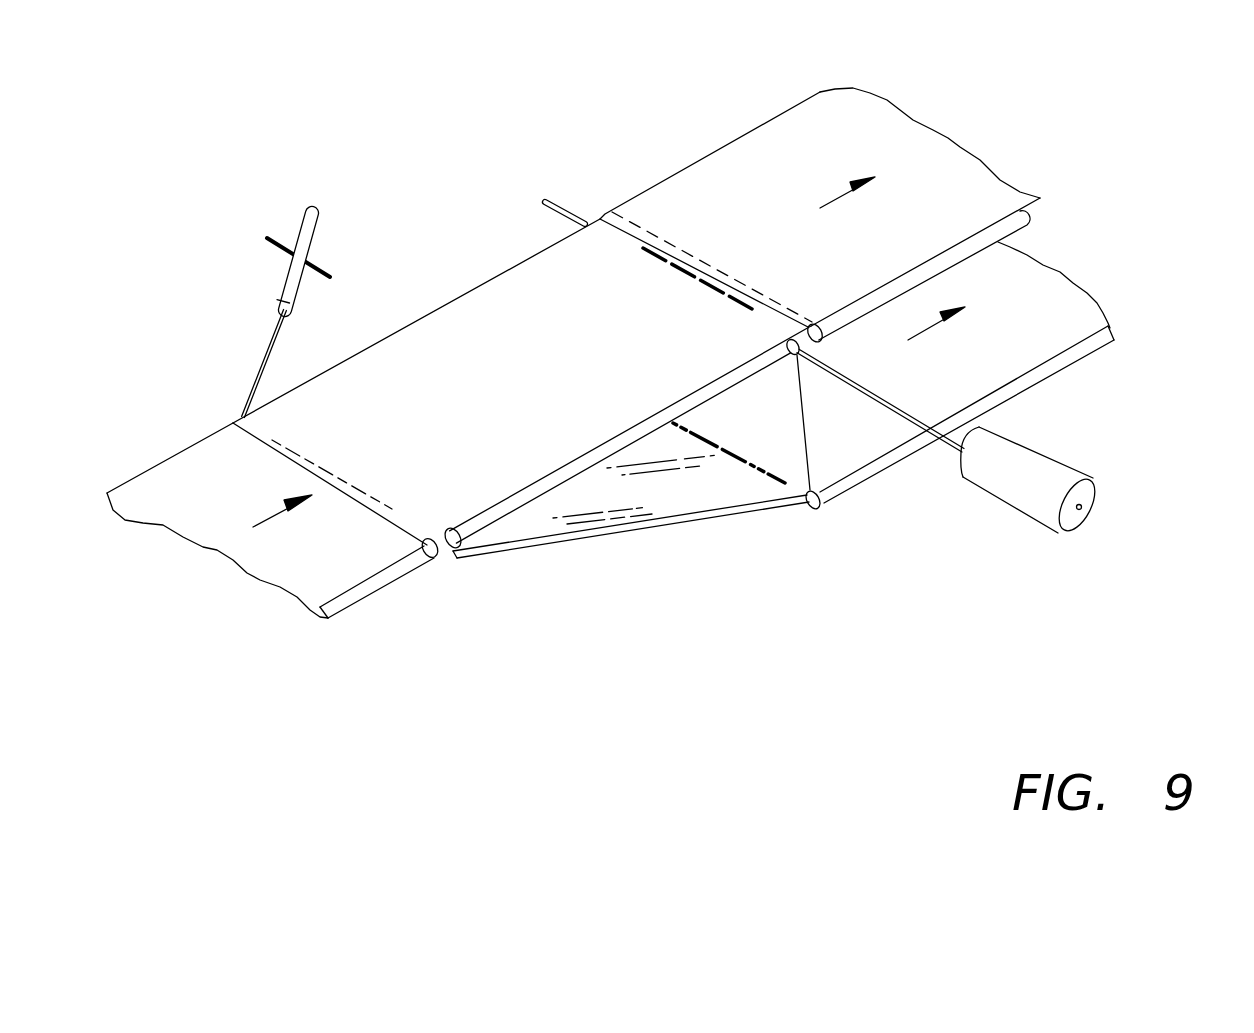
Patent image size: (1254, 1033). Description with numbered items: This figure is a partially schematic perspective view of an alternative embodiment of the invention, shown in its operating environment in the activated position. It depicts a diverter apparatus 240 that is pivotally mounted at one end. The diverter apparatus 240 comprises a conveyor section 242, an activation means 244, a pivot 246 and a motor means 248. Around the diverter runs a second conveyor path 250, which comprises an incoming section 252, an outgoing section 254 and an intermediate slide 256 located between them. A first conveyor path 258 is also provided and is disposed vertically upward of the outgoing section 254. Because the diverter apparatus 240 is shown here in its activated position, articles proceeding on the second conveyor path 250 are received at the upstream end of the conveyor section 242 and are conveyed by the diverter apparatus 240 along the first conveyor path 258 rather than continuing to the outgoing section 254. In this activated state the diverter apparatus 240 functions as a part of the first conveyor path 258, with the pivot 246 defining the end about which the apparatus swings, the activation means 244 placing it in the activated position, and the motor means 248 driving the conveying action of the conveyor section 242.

The diverter apparatus 240 is at (466, 150).
The conveyor section 242 is at (460, 333).
The activation means 244 is at (310, 230).
The pivot 246 is at (563, 210).
The motor means 248 is at (1015, 453).
The second conveyor path 250 is at (540, 562).
The incoming section 252 is at (320, 565).
The outgoing section 254 is at (833, 438).
The intermediate slide 256 is at (677, 487).
The first conveyor path 258 is at (770, 152).